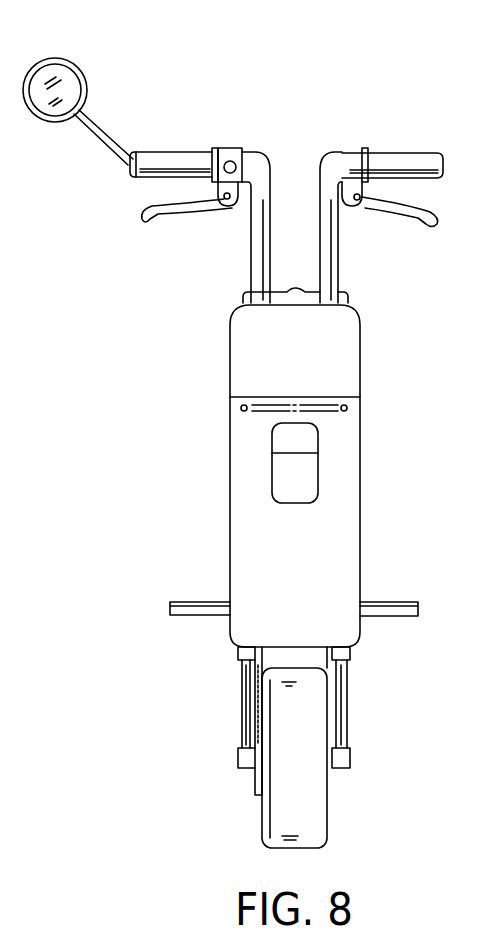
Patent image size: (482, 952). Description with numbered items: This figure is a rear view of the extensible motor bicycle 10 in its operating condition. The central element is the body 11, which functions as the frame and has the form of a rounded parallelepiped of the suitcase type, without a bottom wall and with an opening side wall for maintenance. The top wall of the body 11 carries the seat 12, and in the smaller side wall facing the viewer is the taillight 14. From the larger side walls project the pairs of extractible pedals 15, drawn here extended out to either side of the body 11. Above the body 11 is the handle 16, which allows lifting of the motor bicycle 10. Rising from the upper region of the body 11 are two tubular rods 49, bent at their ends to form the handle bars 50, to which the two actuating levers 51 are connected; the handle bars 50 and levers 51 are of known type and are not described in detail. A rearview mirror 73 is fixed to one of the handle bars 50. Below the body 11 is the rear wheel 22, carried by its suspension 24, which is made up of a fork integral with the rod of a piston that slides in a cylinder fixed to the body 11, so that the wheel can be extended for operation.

The extensible motor bicycle 10 is at (358, 84).
The body 11 is at (372, 529).
The seat 12 is at (338, 343).
The taillight 14 is at (303, 465).
The extractible pedals 15 is at (197, 612).
The handle 16 is at (242, 300).
The rear wheel 22 is at (315, 826).
The rear suspension 24 is at (360, 733).
The tubular rods 49 is at (258, 272).
The handle bars 50 is at (195, 160).
The actuating levers 51 is at (145, 212).
The rearview mirror 73 is at (68, 93).